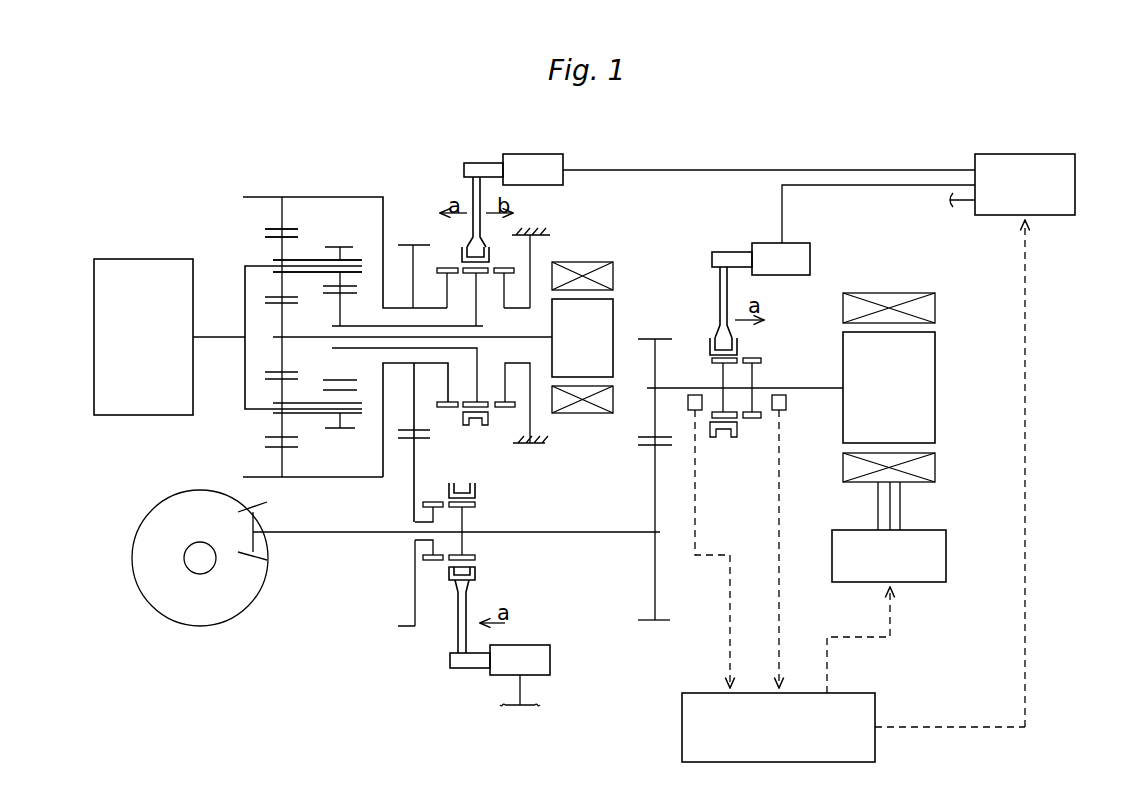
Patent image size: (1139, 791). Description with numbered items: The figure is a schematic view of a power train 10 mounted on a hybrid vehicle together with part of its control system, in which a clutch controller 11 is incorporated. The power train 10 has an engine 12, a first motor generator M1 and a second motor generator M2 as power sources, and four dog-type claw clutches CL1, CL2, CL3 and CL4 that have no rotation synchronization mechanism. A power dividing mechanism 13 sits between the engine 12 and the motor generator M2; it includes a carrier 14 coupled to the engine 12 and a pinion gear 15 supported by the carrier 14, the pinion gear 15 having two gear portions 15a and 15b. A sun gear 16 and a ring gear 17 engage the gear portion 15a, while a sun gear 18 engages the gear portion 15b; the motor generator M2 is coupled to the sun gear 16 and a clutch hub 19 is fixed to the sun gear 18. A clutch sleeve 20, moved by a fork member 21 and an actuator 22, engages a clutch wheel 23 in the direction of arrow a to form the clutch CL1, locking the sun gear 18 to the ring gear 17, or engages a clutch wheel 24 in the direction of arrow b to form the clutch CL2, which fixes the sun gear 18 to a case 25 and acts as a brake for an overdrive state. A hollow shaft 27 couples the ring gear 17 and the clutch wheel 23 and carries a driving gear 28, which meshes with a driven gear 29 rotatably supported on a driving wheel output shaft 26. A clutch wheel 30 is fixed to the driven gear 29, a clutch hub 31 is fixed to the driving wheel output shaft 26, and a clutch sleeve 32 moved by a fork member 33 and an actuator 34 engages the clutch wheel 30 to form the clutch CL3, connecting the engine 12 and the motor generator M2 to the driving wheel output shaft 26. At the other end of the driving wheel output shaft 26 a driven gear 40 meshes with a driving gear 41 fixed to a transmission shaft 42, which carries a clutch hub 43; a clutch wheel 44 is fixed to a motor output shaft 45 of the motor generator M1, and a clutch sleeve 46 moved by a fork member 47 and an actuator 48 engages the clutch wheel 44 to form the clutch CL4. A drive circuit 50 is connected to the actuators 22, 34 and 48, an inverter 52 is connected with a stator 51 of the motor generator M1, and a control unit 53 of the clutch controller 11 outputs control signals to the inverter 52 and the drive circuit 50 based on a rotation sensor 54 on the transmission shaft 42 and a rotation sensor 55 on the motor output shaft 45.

The power train 10 is at (150, 152).
The clutch controller 11 is at (1055, 292).
The engine 12 is at (133, 259).
The power dividing mechanism 13 is at (344, 193).
The carrier 14 is at (245, 402).
The pinion gear 15 is at (312, 255).
The gear portion 15a is at (268, 238).
The gear portion 15b is at (340, 247).
The sun gear 16 is at (289, 303).
The ring gear 17 is at (266, 229).
The sun gear 18 is at (352, 295).
The clutch hub 19 is at (469, 275).
The clutch sleeve 20 is at (462, 250).
The fork member 21 is at (473, 195).
The actuator 22 is at (518, 154).
The clutch wheel 23 is at (440, 274).
The clutch wheel 24 is at (500, 275).
The case 25 is at (545, 238).
The driving wheel output shaft 26 is at (332, 533).
The hollow shaft 27 is at (398, 364).
The driving gear 28 is at (407, 250).
The driven gear 29 is at (400, 627).
The clutch wheel 30 is at (433, 562).
The clutch hub 31 is at (466, 545).
The clutch sleeve 32 is at (477, 490).
The fork member 33 is at (467, 600).
The actuator 34 is at (536, 676).
The driven gear 40 is at (646, 621).
The driving gear 41 is at (652, 338).
The transmission shaft 42 is at (685, 388).
The clutch hub 43 is at (745, 358).
The clutch wheel 44 is at (752, 420).
The motor output shaft 45 is at (818, 388).
The clutch sleeve 46 is at (722, 438).
The fork member 47 is at (720, 292).
The actuator 48 is at (760, 243).
The drive circuit 50 is at (1046, 154).
The stator 51 is at (937, 461).
The inverter 52 is at (925, 583).
The control unit 53 is at (876, 710).
The rotation sensor 54 is at (692, 412).
The rotation sensor 55 is at (780, 412).
The first motor generator M1 is at (887, 288).
The second motor generator M2 is at (612, 256).
The clutch CL1 is at (449, 412).
The clutch CL2 is at (505, 412).
The clutch CL3 is at (438, 648).
The clutch CL4 is at (748, 488).